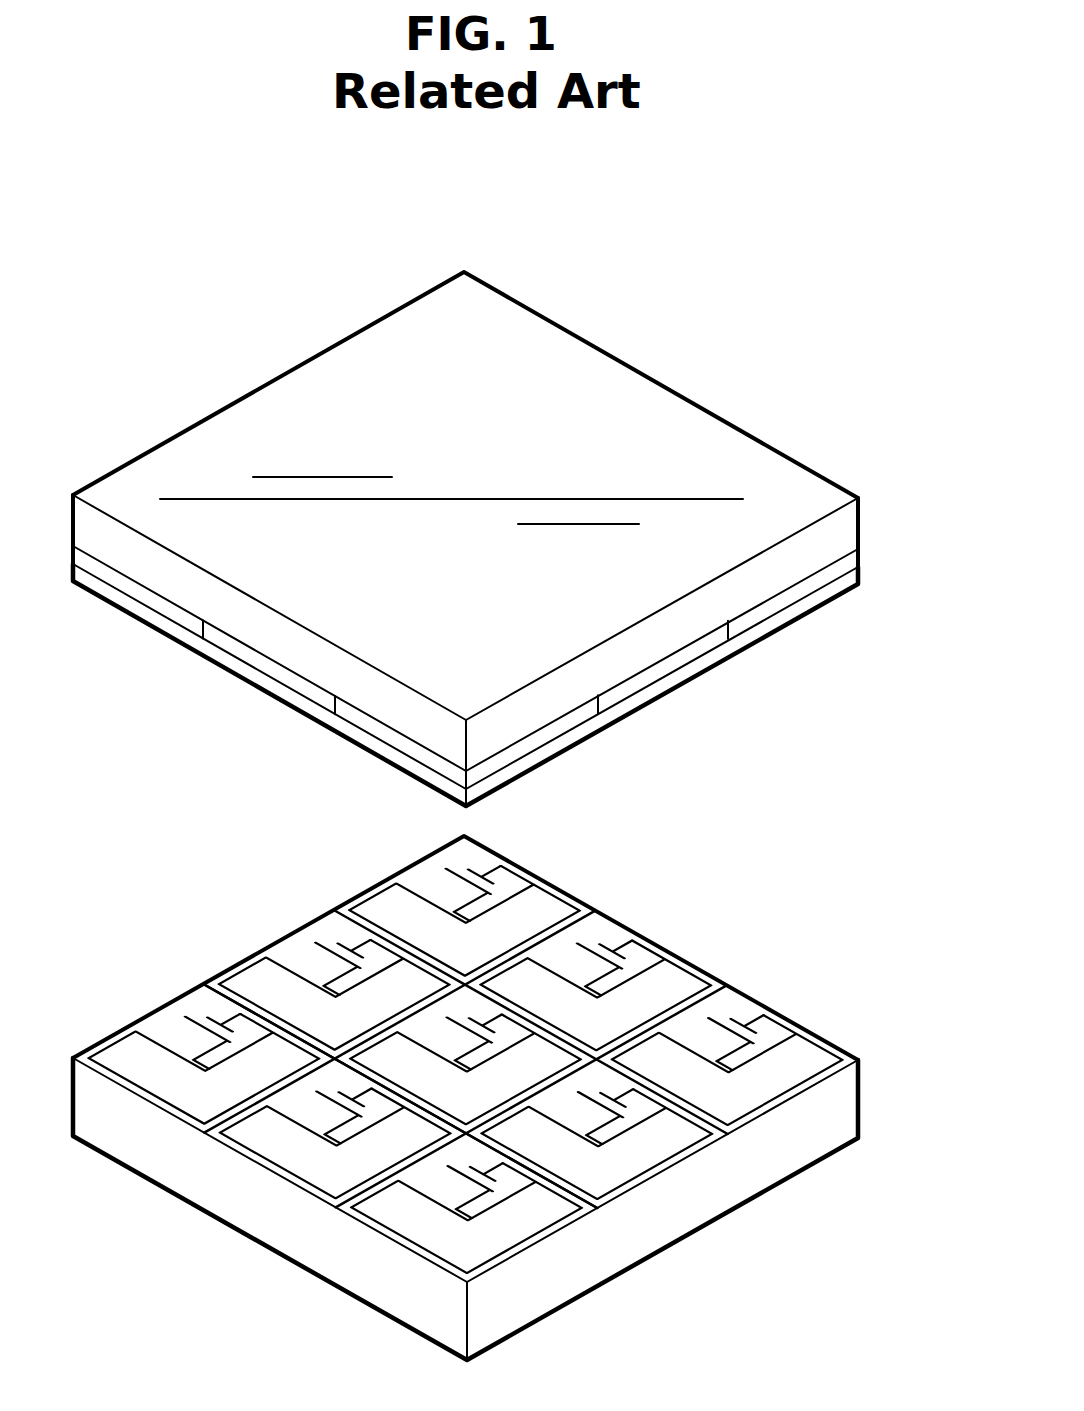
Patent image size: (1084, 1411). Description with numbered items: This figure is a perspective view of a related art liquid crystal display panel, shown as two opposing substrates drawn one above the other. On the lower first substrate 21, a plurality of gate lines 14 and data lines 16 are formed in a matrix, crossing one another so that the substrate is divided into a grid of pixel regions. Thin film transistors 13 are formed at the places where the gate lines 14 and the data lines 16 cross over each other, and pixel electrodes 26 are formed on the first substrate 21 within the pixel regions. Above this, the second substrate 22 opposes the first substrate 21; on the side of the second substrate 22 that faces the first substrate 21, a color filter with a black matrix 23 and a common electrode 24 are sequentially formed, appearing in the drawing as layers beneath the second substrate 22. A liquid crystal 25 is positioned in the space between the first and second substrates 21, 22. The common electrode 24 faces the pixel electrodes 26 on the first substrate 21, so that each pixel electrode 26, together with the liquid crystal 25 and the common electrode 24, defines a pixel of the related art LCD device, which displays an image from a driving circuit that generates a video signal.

The thin film transistor 13 is at (458, 1178).
The gate line 14 is at (582, 1210).
The data line 16 is at (352, 1192).
The first substrate 21 is at (740, 1185).
The second substrate 22 is at (852, 527).
The color filter with black matrix 23 is at (832, 578).
The common electrode 24 is at (820, 610).
The liquid crystal 25 is at (834, 823).
The pixel electrode 26 is at (510, 1230).